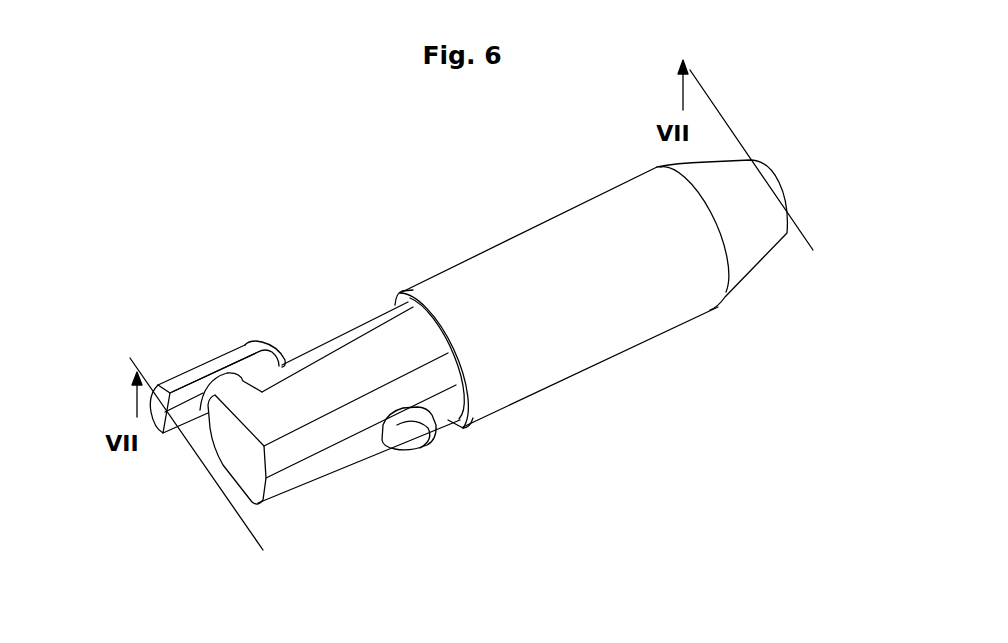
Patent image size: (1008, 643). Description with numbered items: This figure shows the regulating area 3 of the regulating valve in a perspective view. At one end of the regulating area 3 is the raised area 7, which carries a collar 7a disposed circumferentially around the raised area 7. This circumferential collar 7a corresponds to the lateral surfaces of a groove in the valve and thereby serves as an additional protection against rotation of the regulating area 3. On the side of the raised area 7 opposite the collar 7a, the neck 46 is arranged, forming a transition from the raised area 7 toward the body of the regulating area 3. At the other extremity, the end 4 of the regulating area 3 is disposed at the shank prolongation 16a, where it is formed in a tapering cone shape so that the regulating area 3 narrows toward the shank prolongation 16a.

The regulating area 3 is at (317, 218).
The end 4 is at (755, 218).
The raised area 7 is at (197, 365).
The collar 7a is at (225, 365).
The shank prolongation 16a is at (593, 285).
The neck 46 is at (397, 427).